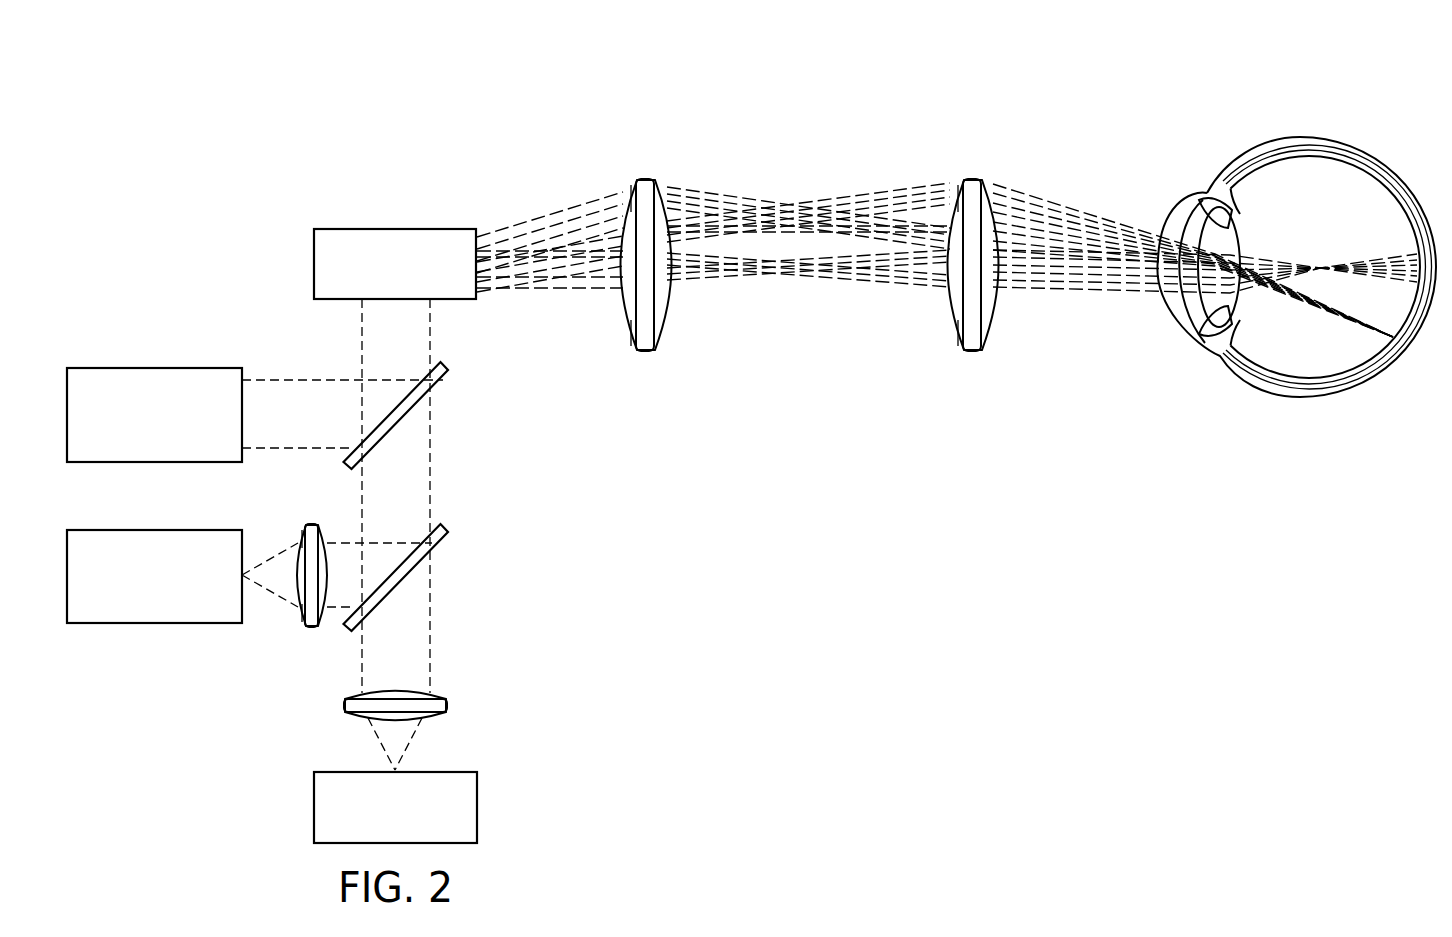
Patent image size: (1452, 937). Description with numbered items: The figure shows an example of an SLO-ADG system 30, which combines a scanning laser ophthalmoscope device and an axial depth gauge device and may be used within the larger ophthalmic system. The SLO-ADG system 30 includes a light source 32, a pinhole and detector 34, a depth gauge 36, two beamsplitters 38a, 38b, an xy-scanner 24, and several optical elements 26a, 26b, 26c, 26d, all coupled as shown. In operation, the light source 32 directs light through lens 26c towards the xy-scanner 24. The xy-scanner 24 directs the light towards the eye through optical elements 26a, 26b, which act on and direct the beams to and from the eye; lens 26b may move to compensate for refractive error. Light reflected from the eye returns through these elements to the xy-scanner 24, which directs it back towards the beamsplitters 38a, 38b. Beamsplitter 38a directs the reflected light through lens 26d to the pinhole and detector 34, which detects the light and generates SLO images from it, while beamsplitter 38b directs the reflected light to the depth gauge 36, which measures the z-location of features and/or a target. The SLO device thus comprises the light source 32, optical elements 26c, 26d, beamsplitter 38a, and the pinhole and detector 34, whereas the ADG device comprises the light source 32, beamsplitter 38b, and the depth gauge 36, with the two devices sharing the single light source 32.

The SLO-ADG system 30 is at (178, 143).
The xy-scanner 24 is at (395, 229).
The optical element 26a is at (641, 178).
The lens 26b is at (973, 178).
The lens 26c is at (448, 706).
The optical element 26d is at (309, 629).
The light source 32 is at (314, 805).
The pinhole and detector 34 is at (152, 623).
The depth gauge 36 is at (149, 368).
The beamsplitter 38a is at (446, 541).
The beamsplitter 38b is at (446, 379).